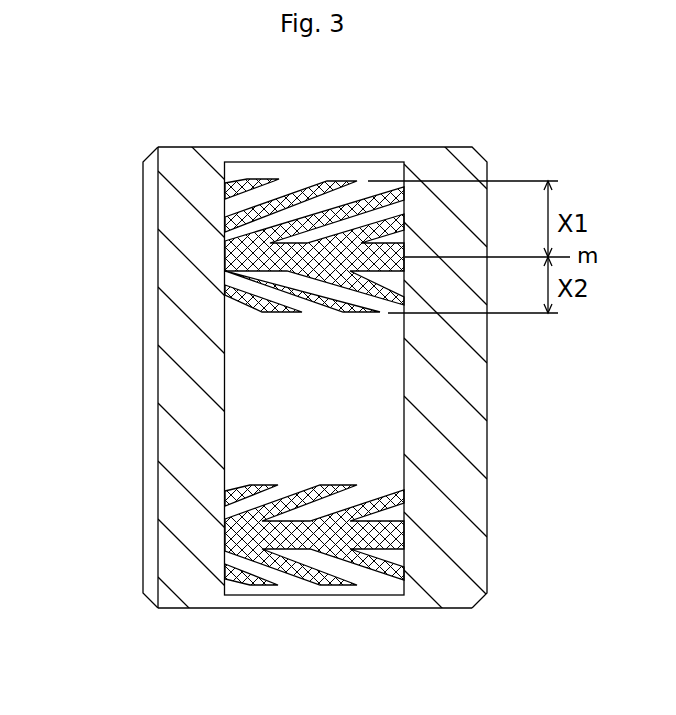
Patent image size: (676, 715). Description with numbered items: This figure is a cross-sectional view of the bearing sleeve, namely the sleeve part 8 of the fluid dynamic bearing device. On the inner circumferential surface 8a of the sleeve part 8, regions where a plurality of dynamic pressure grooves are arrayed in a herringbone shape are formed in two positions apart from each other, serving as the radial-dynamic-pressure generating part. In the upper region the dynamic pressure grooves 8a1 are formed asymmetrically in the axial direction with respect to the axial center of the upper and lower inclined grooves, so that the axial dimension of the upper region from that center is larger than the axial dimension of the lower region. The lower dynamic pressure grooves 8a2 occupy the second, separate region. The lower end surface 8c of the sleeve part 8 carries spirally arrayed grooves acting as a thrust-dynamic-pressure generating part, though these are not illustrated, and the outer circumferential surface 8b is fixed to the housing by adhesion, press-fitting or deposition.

The sleeve part 8 is at (120, 150).
The inner circumferential surface 8a is at (412, 387).
The upper dynamic pressure groove 8a1 is at (268, 192).
The lower dynamic pressure groove 8a2 is at (276, 497).
The outer circumferential surface 8b is at (143, 346).
The lower end surface 8c is at (183, 610).